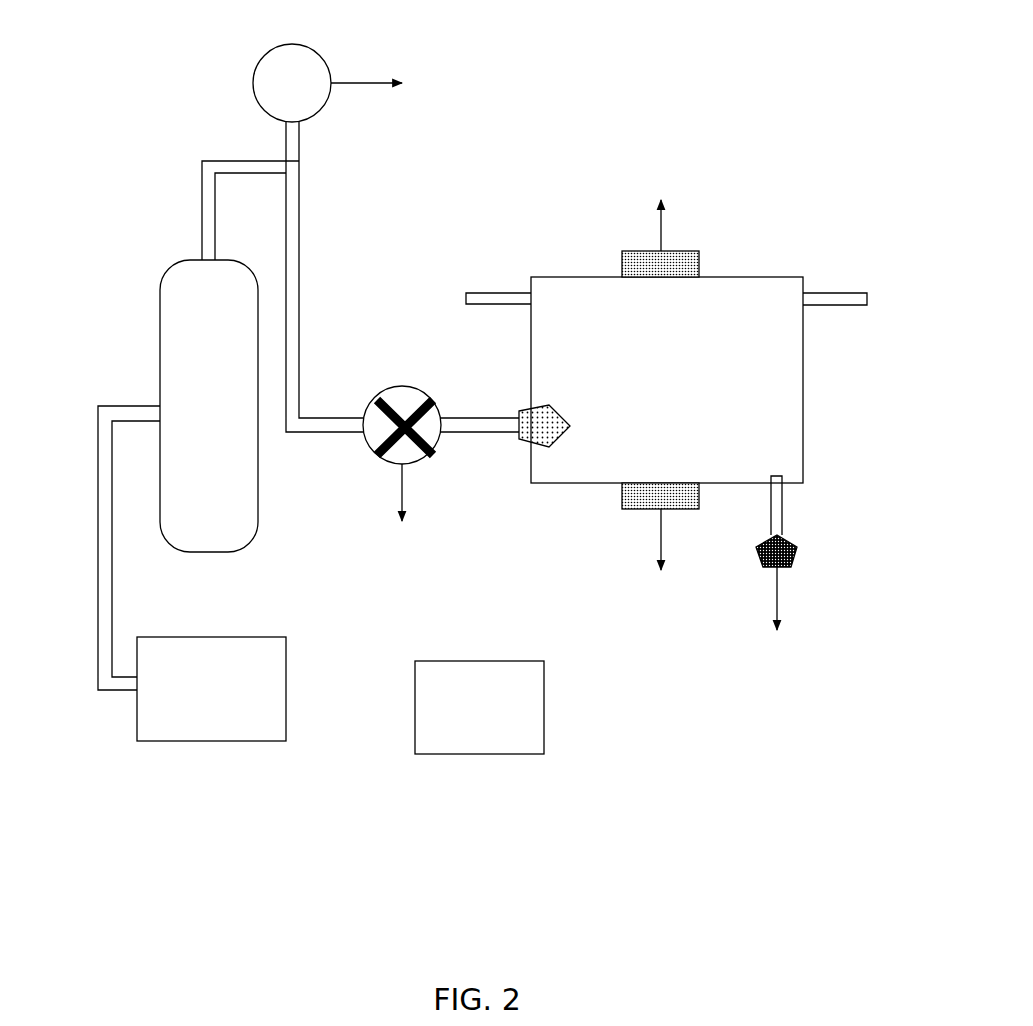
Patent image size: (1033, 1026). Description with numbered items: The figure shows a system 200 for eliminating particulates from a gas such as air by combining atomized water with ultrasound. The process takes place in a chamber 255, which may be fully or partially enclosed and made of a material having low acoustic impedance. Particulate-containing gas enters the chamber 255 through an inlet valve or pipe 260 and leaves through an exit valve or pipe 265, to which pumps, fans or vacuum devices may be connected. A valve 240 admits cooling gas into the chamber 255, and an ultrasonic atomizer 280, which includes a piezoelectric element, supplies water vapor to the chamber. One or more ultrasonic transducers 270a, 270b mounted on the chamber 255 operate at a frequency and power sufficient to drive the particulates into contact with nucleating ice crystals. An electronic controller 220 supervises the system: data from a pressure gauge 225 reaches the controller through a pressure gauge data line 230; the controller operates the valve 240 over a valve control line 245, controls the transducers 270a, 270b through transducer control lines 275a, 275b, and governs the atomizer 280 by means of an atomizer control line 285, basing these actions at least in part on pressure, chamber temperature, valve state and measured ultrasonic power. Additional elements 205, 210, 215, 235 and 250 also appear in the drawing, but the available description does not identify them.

The system 200 is at (637, 95).
The pump 205 is at (211, 689).
The vessel 210 is at (209, 406).
The conduit 215 is at (98, 548).
The electronic controller 220 is at (479, 707).
The pressure gauge 225 is at (292, 83).
The pressure gauge data line 230 is at (387, 84).
The conduit 235 is at (360, 277).
The valve 240 is at (402, 409).
The valve control line 245 is at (405, 504).
The nozzle 250 is at (522, 454).
The chamber 255 is at (667, 380).
The inlet valve or pipe 260 is at (476, 303).
The exit valve or pipe 265 is at (835, 285).
The ultrasonic transducer 270a is at (690, 264).
The ultrasonic transducer 270b is at (630, 496).
The transducer control line 275a is at (661, 212).
The transducer control line 275b is at (657, 553).
The ultrasonic atomizer 280 is at (801, 523).
The atomizer control line 285 is at (777, 613).